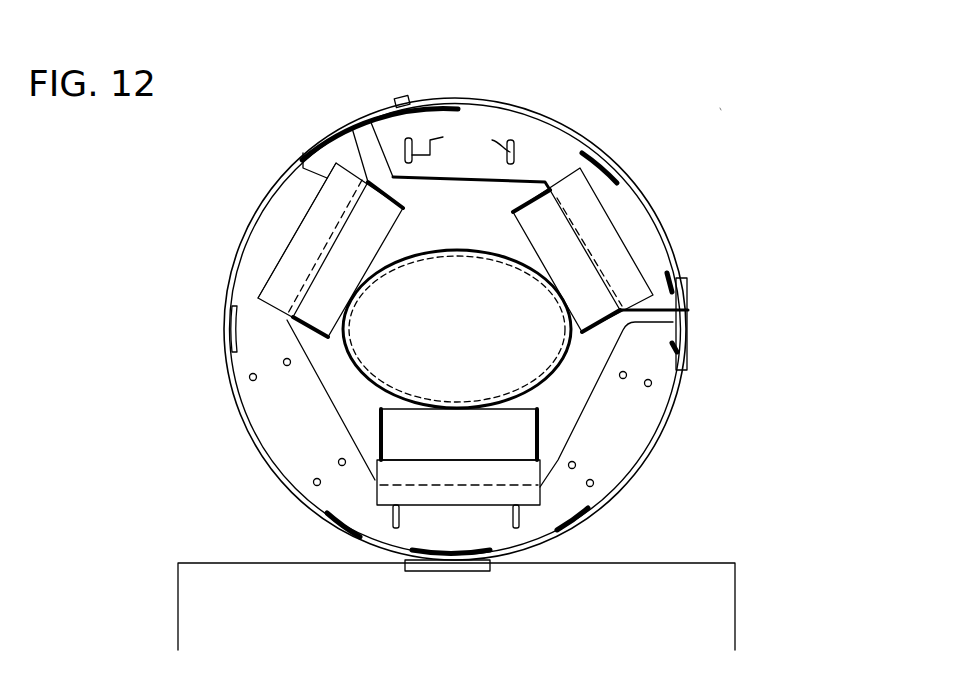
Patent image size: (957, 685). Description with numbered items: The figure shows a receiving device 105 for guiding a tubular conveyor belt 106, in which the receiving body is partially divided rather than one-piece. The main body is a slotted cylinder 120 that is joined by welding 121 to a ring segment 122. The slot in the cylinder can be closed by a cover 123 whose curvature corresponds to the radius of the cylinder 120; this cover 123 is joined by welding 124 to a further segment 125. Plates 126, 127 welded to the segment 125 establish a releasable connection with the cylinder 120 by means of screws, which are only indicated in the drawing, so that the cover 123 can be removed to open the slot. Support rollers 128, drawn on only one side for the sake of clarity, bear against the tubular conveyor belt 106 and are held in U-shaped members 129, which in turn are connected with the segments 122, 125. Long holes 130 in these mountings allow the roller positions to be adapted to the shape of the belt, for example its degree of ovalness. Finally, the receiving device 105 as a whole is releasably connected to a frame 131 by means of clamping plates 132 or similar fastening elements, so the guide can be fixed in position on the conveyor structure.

The receiving device 105 is at (718, 108).
The tubular conveyor belt 106 is at (472, 258).
The slotted cylinder 120 is at (642, 461).
The welding 121 is at (688, 350).
The ring segment 122 is at (276, 424).
The cover 123 is at (660, 200).
The welding 124 is at (405, 97).
The further segment 125 is at (550, 148).
The plate 126 is at (363, 121).
The plate 127 is at (690, 310).
The support roller 128 is at (333, 257).
The U-shaped member 129 is at (287, 272).
The long hole 130 is at (305, 153).
The frame 131 is at (407, 576).
The clamping plate 132 is at (705, 562).